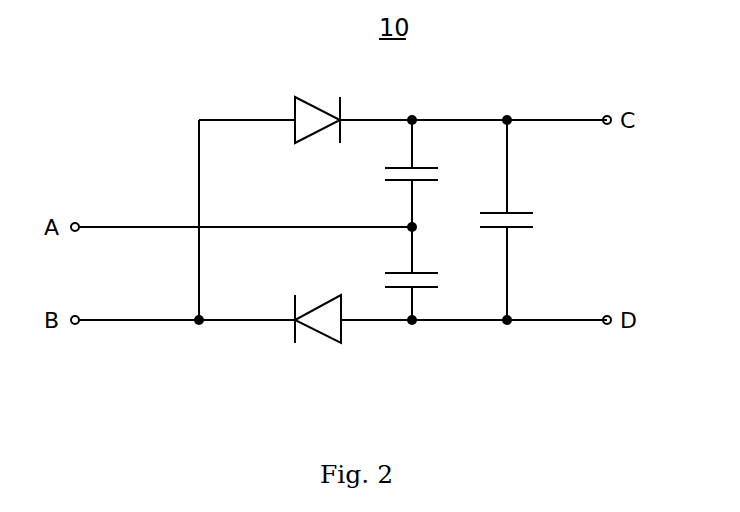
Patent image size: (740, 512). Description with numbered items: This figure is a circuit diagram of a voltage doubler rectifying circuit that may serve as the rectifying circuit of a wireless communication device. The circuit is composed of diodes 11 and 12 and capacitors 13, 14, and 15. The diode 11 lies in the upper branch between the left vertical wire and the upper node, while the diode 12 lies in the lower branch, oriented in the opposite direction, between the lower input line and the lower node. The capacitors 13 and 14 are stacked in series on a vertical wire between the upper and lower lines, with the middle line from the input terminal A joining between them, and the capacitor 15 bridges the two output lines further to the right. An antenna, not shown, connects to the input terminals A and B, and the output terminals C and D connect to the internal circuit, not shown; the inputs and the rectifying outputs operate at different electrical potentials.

The diode 11 is at (314, 140).
The diode 12 is at (321, 338).
The capacitor 13 is at (428, 163).
The capacitor 14 is at (430, 292).
The capacitor 15 is at (522, 212).